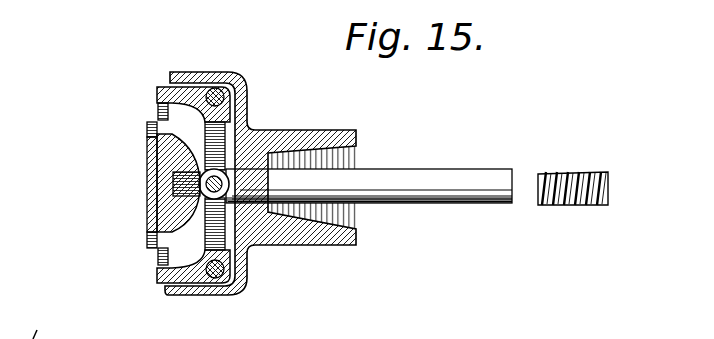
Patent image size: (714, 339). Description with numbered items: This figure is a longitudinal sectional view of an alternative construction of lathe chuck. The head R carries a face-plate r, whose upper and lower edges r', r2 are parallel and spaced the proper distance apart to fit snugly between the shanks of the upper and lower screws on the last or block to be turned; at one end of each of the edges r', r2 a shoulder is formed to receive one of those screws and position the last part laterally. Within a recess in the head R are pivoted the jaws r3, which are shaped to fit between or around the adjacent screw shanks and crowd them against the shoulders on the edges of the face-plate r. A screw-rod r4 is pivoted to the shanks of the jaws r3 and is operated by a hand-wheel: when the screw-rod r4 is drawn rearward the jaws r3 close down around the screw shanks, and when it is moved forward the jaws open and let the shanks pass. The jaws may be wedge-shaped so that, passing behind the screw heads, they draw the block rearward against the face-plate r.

The head R is at (251, 128).
The face-plate r is at (155, 183).
The upper edge r' is at (136, 126).
The lower edge r2 is at (147, 240).
The jaws r3 is at (158, 270).
The screw-rod r4 is at (412, 176).